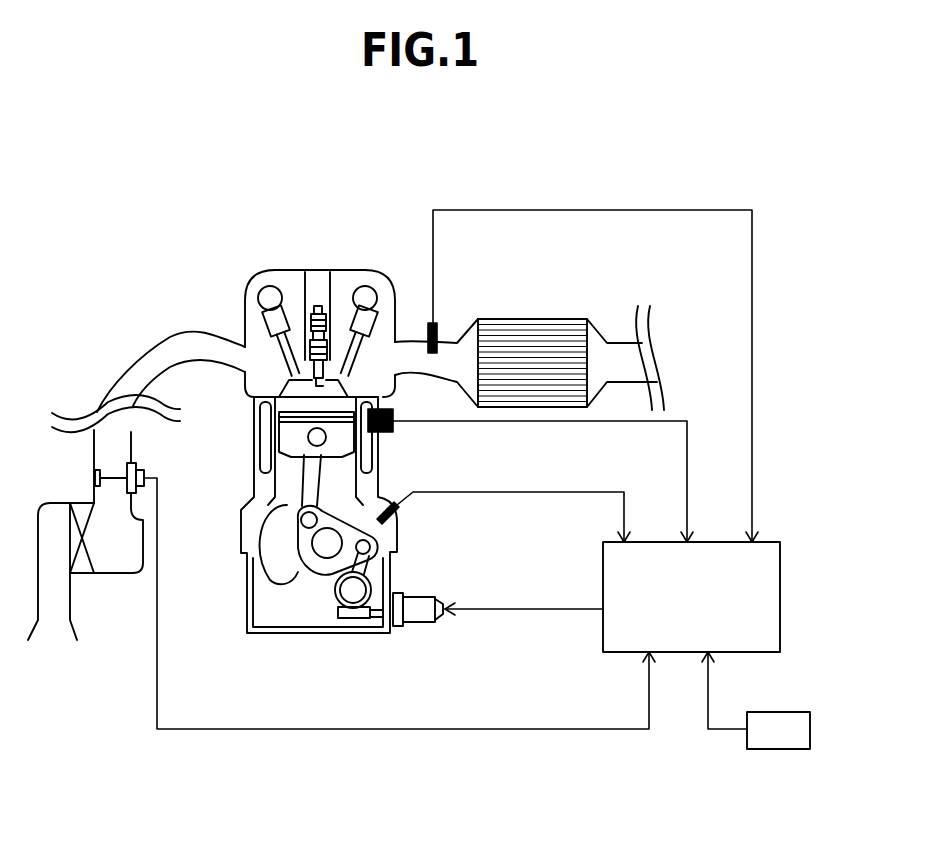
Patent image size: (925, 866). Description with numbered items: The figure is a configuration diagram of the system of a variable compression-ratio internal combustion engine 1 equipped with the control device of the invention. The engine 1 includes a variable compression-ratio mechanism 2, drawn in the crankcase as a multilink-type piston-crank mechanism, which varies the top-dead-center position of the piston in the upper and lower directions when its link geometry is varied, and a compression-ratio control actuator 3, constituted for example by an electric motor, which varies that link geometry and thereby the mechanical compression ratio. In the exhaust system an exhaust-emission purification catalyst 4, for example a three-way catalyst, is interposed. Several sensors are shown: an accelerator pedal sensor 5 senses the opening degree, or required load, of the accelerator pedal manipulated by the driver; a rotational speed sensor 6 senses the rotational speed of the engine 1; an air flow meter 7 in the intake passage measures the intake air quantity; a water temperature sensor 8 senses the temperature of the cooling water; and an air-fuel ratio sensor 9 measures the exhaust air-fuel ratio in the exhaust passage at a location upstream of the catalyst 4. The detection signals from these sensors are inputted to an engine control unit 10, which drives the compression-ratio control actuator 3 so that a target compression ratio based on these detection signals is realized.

The variable compression-ratio internal combustion engine 1 is at (265, 455).
The variable compression-ratio mechanism 2 is at (280, 610).
The compression-ratio control actuator 3 is at (425, 617).
The exhaust-emission purification catalyst 4 is at (535, 327).
The accelerator pedal sensor 5 is at (770, 737).
The rotational speed sensor 6 is at (399, 506).
The air flow meter 7 is at (145, 473).
The water temperature sensor 8 is at (393, 428).
The air-fuel ratio sensor 9 is at (436, 323).
The engine control unit 10 is at (613, 567).